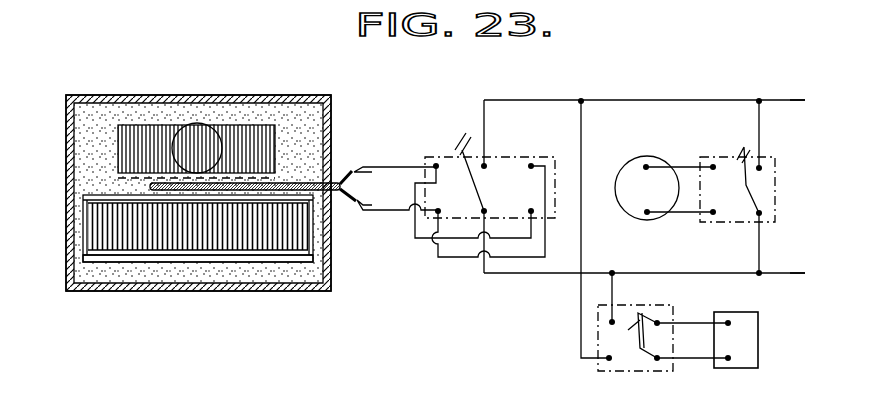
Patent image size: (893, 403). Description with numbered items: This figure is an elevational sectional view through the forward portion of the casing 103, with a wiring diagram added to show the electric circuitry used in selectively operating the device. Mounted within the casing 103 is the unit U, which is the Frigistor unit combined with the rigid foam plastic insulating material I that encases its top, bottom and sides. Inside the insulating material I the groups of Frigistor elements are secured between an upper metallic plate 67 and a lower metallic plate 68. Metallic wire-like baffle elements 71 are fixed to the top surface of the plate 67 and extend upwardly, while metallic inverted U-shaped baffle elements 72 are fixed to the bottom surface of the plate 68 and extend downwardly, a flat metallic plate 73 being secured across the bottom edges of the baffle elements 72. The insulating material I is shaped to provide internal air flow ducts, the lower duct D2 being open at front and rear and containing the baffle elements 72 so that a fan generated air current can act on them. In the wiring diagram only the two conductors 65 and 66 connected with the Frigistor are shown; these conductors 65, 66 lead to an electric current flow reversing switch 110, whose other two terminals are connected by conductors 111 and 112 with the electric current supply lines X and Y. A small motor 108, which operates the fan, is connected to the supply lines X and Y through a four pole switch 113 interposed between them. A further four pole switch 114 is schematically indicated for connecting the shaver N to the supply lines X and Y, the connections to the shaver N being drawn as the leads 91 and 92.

The unit U is at (85, 290).
The casing 103 is at (174, 97).
The insulating material I is at (105, 117).
The lower air flow duct D2 is at (300, 147).
The wire-like baffle elements 71 is at (237, 132).
The metallic plate 67 is at (150, 184).
The metallic plate 68 is at (95, 192).
The inverted U-shaped baffle elements 72 is at (228, 258).
The flat metallic plate 73 is at (292, 263).
The conductor 65 is at (348, 175).
The conductor 66 is at (348, 205).
The electric current flow reversing switch 110 is at (430, 157).
The conductor 111 is at (545, 100).
The conductor 112 is at (578, 280).
The motor 108 is at (652, 155).
The four pole switch 113 is at (713, 157).
The electric current supply line X is at (773, 80).
The electric current supply line Y is at (782, 277).
The four pole switch 114 is at (640, 372).
The conductor 91 is at (710, 322).
The conductor 92 is at (687, 360).
The shaver N is at (736, 340).